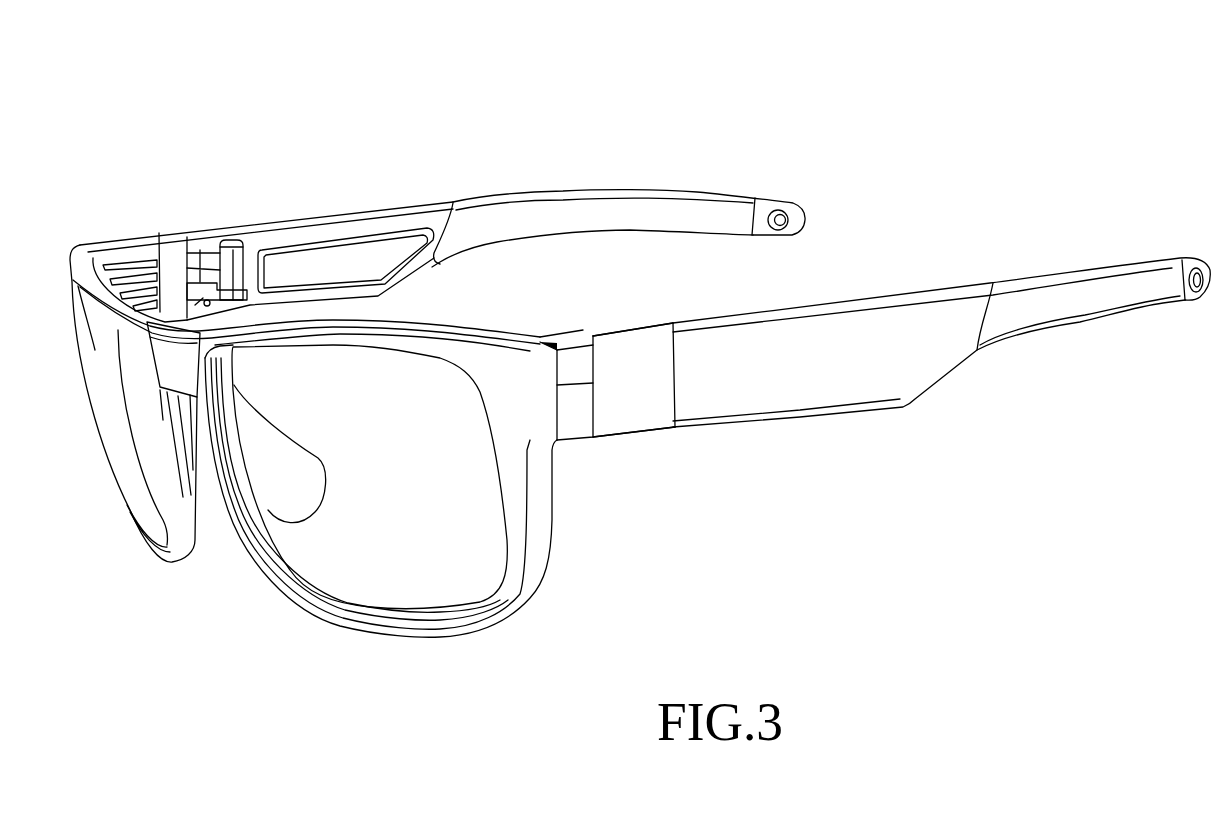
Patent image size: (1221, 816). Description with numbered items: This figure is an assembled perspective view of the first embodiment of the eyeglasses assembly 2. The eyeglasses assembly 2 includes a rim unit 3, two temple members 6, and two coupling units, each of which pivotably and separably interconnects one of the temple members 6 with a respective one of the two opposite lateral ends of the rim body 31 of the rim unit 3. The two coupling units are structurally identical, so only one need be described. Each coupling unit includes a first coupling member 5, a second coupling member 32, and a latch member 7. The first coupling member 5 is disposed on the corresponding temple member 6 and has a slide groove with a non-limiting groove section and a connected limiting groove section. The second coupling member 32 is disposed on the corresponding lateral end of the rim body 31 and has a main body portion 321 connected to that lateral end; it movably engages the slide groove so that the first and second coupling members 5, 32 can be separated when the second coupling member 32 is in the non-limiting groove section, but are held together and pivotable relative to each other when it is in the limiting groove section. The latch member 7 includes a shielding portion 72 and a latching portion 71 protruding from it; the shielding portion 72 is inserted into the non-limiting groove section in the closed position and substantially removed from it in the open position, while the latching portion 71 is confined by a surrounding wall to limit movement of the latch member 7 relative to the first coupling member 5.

The eyeglasses assembly 2 is at (373, 147).
The rim unit 3 is at (263, 592).
The rim body 31 is at (460, 347).
The second coupling member 32 is at (123, 230).
The main body portion 321 is at (157, 247).
The first coupling member 5 is at (205, 224).
The temple member 6 is at (540, 208).
The latch member 7 is at (227, 233).
The latching portion 71 is at (230, 292).
The shielding portion 72 is at (257, 291).